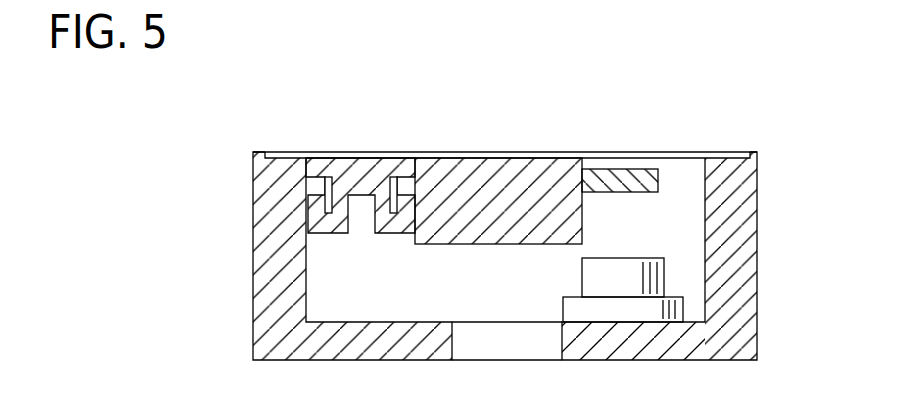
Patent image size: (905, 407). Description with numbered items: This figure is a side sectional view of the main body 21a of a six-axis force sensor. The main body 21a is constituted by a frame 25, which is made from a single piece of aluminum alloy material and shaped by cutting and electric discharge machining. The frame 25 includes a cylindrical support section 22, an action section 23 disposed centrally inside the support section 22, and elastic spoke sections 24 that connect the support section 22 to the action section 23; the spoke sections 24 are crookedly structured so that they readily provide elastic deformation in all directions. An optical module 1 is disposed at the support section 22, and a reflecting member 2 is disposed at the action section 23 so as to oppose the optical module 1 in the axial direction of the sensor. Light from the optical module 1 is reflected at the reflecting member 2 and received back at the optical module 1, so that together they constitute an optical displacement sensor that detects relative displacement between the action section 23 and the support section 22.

The optical module 1 is at (657, 278).
The reflecting member 2 is at (637, 177).
The main body 21a is at (233, 172).
The support section 22 is at (258, 246).
The action section 23 is at (542, 188).
The elastic spoke section 24 is at (360, 182).
The frame 25 is at (767, 196).